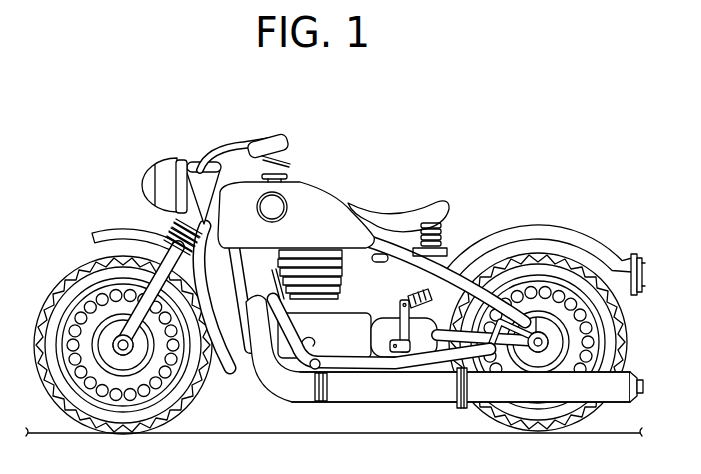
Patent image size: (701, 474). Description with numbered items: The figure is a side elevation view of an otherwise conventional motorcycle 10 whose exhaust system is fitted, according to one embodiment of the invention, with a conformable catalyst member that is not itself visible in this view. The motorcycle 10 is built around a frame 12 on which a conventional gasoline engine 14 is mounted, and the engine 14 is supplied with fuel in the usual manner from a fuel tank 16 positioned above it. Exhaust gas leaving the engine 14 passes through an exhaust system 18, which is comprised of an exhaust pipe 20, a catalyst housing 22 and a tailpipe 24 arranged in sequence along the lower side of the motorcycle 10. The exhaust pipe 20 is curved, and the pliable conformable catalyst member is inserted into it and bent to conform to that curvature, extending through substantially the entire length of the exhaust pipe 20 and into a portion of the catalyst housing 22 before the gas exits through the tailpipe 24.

The motorcycle 10 is at (462, 158).
The frame 12 is at (467, 287).
The gasoline engine 14 is at (338, 283).
The fuel tank 16 is at (313, 210).
The exhaust system 18 is at (284, 395).
The exhaust pipe 20 is at (268, 371).
The catalyst housing 22 is at (388, 392).
The tailpipe 24 is at (621, 397).